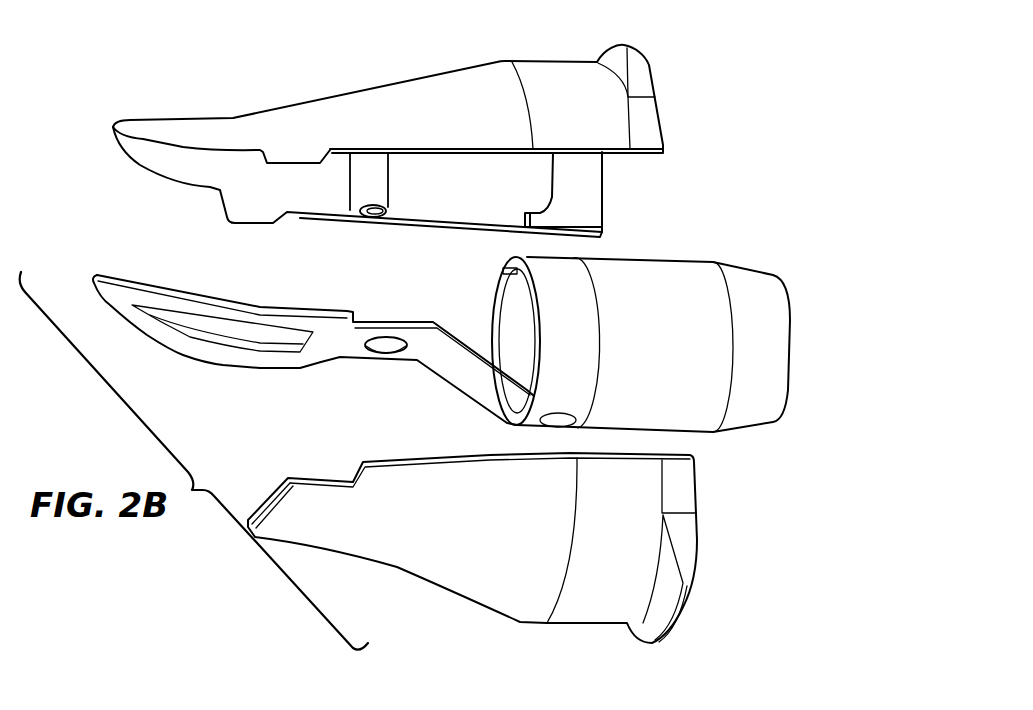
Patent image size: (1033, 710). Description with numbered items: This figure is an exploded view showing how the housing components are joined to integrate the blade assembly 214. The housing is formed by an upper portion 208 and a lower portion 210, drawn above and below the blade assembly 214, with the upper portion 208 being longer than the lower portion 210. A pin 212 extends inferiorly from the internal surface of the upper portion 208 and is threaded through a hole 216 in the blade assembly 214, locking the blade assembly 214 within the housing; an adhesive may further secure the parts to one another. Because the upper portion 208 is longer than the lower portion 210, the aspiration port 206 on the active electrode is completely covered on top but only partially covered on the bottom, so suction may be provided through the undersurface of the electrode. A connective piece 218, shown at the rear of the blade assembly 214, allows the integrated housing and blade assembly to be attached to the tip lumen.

The upper portion 208 is at (567, 68).
The pin 212 is at (373, 195).
The blade assembly 214 is at (313, 343).
The aspiration port 206 is at (197, 328).
The hole 216 is at (385, 345).
The connective piece 218 is at (652, 268).
The lower portion 210 is at (598, 613).